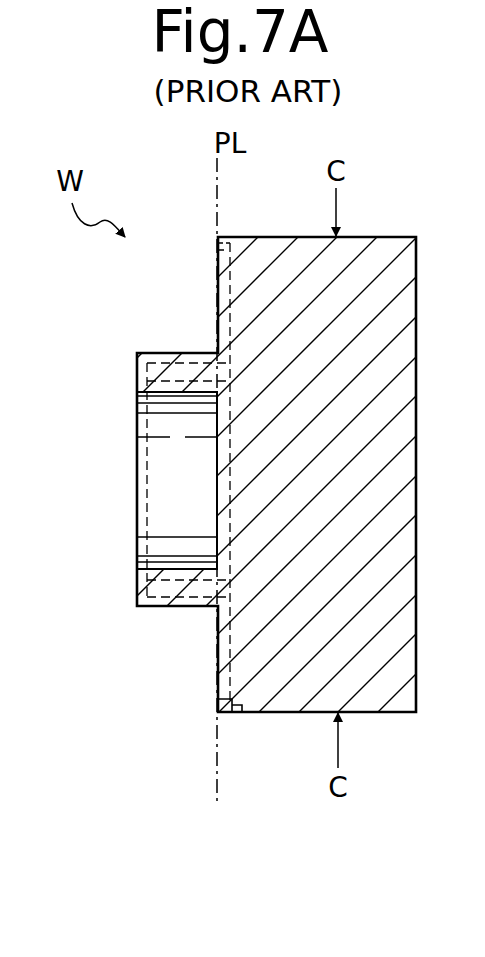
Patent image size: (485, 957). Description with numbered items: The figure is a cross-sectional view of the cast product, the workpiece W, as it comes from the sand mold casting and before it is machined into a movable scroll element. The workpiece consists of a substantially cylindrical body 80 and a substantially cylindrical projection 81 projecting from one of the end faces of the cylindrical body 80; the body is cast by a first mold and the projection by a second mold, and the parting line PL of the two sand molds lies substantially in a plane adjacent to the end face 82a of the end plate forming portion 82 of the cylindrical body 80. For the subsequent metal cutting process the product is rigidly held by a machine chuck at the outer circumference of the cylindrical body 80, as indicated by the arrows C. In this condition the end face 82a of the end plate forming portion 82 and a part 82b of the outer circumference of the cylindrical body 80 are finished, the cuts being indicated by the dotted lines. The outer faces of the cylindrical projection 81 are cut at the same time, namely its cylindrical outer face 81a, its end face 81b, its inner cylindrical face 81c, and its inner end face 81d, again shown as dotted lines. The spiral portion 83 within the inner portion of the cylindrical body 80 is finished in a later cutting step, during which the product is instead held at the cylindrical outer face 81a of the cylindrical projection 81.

The cylindrical body 80 is at (242, 551).
The cylindrical projection 81 is at (124, 454).
The cylindrical outer face 81a is at (177, 352).
The end face 81b is at (150, 582).
The inner cylindrical face 81c is at (183, 568).
The inner end face 81d is at (215, 447).
The end plate forming portion 82 is at (242, 515).
The end face 82a is at (236, 702).
The part of the outer circumference 82b is at (232, 242).
The spiral portion 83 is at (385, 692).